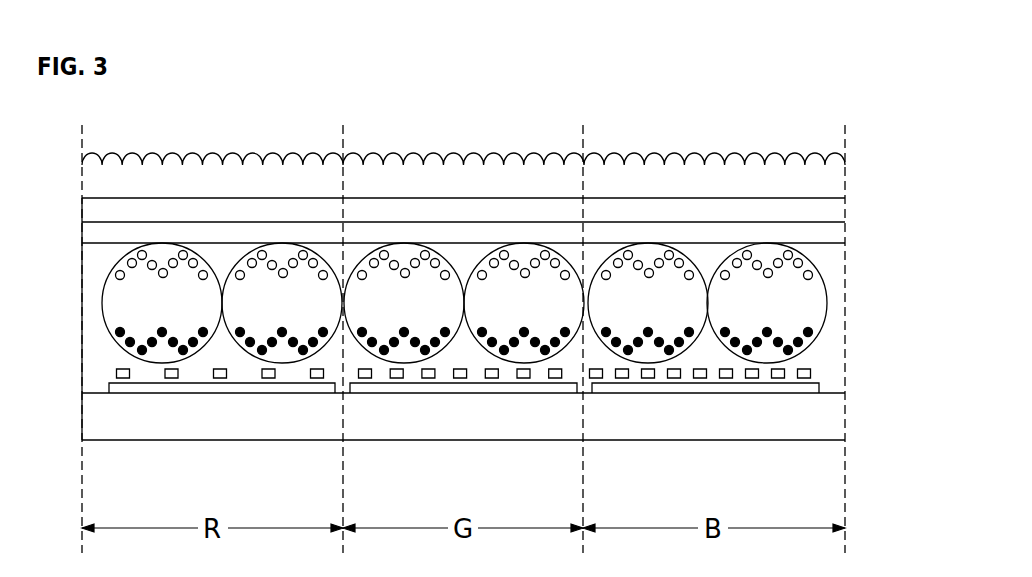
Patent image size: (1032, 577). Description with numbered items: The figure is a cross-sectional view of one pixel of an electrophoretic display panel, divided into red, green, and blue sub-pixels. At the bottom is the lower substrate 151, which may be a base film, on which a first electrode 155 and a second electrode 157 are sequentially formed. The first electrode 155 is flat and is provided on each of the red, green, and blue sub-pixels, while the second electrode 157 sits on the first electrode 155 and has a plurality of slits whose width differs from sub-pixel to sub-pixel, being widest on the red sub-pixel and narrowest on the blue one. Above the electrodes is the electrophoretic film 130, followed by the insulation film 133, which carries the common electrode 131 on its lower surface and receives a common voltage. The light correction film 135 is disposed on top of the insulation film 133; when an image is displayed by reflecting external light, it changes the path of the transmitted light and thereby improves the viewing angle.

The electrophoretic film 130 is at (885, 244).
The common electrode 131 is at (842, 230).
The insulation film 133 is at (842, 210).
The light correction film 135 is at (842, 175).
The lower substrate 151 is at (752, 433).
The first electrode 155 is at (772, 393).
The second electrode 157 is at (808, 380).